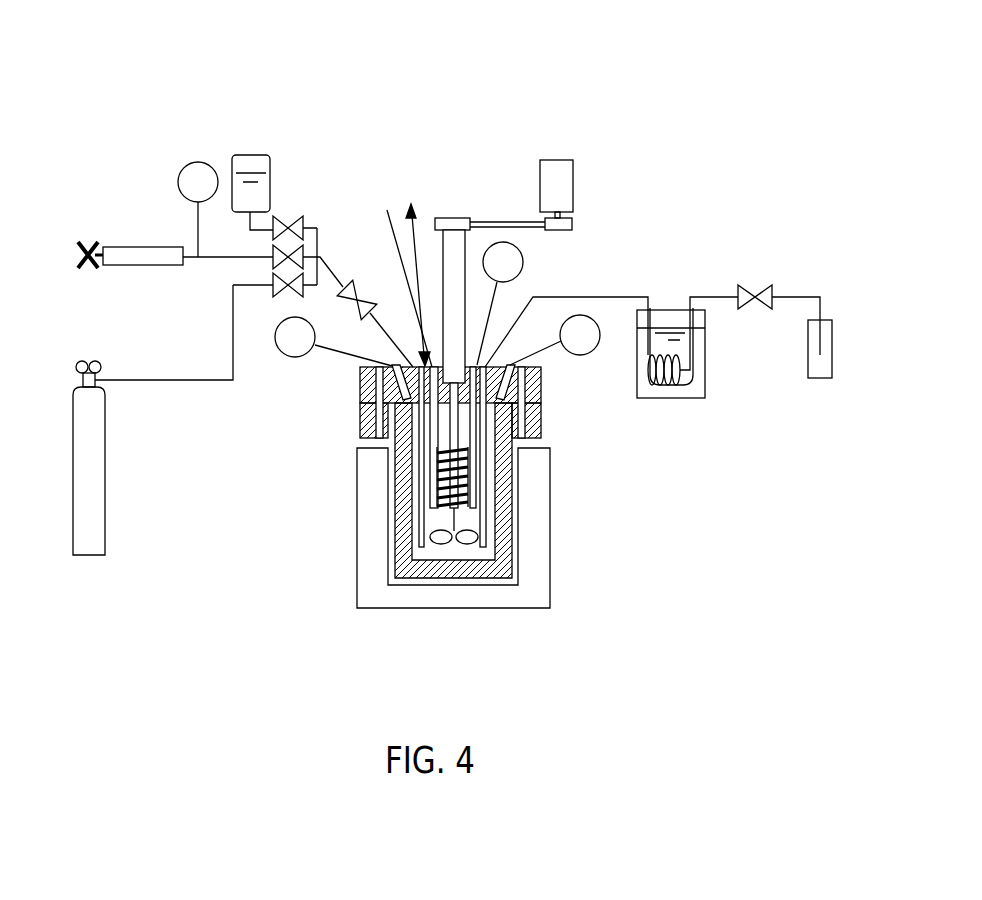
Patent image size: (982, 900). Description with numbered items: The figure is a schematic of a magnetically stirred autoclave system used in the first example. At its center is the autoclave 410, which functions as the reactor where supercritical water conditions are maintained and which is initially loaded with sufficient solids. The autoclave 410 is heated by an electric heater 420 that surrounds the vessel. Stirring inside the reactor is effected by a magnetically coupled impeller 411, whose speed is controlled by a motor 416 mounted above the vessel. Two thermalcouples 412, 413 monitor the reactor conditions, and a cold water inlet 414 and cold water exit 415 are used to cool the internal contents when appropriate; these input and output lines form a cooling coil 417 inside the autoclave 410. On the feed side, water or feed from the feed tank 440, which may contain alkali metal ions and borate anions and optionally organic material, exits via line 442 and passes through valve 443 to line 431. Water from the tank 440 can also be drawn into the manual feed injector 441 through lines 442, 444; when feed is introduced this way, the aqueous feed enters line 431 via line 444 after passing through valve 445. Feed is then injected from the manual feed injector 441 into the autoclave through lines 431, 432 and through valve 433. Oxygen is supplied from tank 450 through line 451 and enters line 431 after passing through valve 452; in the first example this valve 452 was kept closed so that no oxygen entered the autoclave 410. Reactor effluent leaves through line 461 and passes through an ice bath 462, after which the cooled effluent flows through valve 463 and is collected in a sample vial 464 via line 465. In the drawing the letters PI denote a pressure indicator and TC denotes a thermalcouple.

The autoclave 410 is at (505, 507).
The magnetically coupled impeller 411 is at (435, 537).
The thermalcouple 412 is at (523, 262).
The thermalcouple 413 is at (580, 355).
The cold water inlet 414 is at (387, 210).
The cold water exit 415 is at (418, 248).
The motor 416 is at (568, 160).
The cooling coil 417 is at (437, 472).
The electric heater 420 is at (357, 600).
The line 431 is at (384, 328).
The line 432 is at (320, 258).
The valve 433 is at (350, 306).
The feed tank 440 is at (254, 153).
The manual feed injector 441 is at (143, 247).
The line 442 is at (250, 230).
The valve 443 is at (290, 222).
The line 444 is at (213, 258).
The valve 445 is at (274, 259).
The oxygen tank 450 is at (105, 478).
The line 451 is at (163, 380).
The valve 452 is at (282, 292).
The line 461 is at (612, 297).
The ice bath 462 is at (705, 383).
The valve 463 is at (803, 262).
The sample vial 464 is at (832, 355).
The line 465 is at (823, 305).